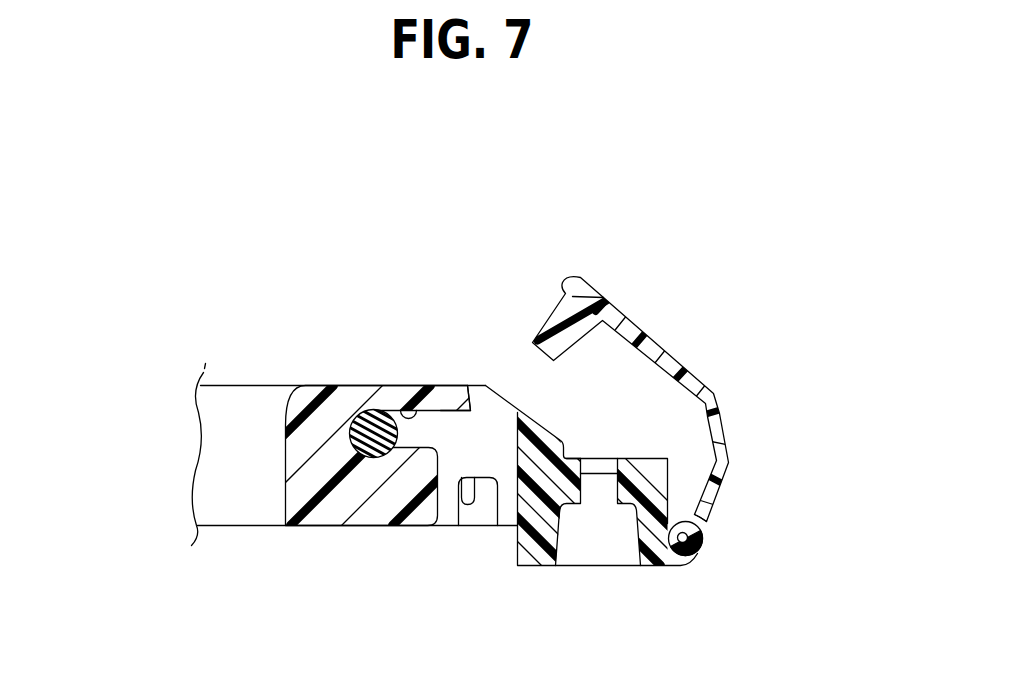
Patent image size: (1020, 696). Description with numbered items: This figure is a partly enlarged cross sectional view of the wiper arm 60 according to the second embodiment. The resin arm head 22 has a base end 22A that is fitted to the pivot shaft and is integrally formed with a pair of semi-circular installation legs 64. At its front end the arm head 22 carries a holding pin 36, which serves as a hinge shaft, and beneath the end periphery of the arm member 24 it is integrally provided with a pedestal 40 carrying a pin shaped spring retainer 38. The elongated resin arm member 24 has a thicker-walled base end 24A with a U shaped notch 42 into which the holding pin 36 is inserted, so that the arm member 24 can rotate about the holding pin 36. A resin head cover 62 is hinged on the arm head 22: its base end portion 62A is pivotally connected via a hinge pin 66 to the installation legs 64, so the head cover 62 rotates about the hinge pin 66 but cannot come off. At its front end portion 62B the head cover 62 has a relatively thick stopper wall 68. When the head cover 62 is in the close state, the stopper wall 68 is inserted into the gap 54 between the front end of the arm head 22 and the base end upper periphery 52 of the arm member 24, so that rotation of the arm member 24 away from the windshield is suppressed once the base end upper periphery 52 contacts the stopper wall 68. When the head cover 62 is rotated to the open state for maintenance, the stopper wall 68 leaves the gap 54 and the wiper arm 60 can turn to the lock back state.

The arm head 22 is at (561, 523).
The base end of the arm head 22A is at (640, 483).
The arm member 24 is at (260, 385).
The base end of the arm member 24A is at (345, 397).
The holding pin 36 is at (370, 457).
The pin shaped spring retainer 38 is at (467, 490).
The pedestal 40 is at (480, 510).
The U shaped notch 42 is at (413, 405).
The base end upper periphery 52 is at (452, 397).
The gap 54 is at (500, 418).
The wiper arm 60 is at (530, 216).
The head cover 62 is at (642, 404).
The base end portion of the head cover 62A is at (698, 518).
The front end portion of the head cover 62B is at (617, 310).
The installation legs 64 is at (690, 553).
The hinge pin 66 is at (690, 553).
The stopper wall 68 is at (560, 317).